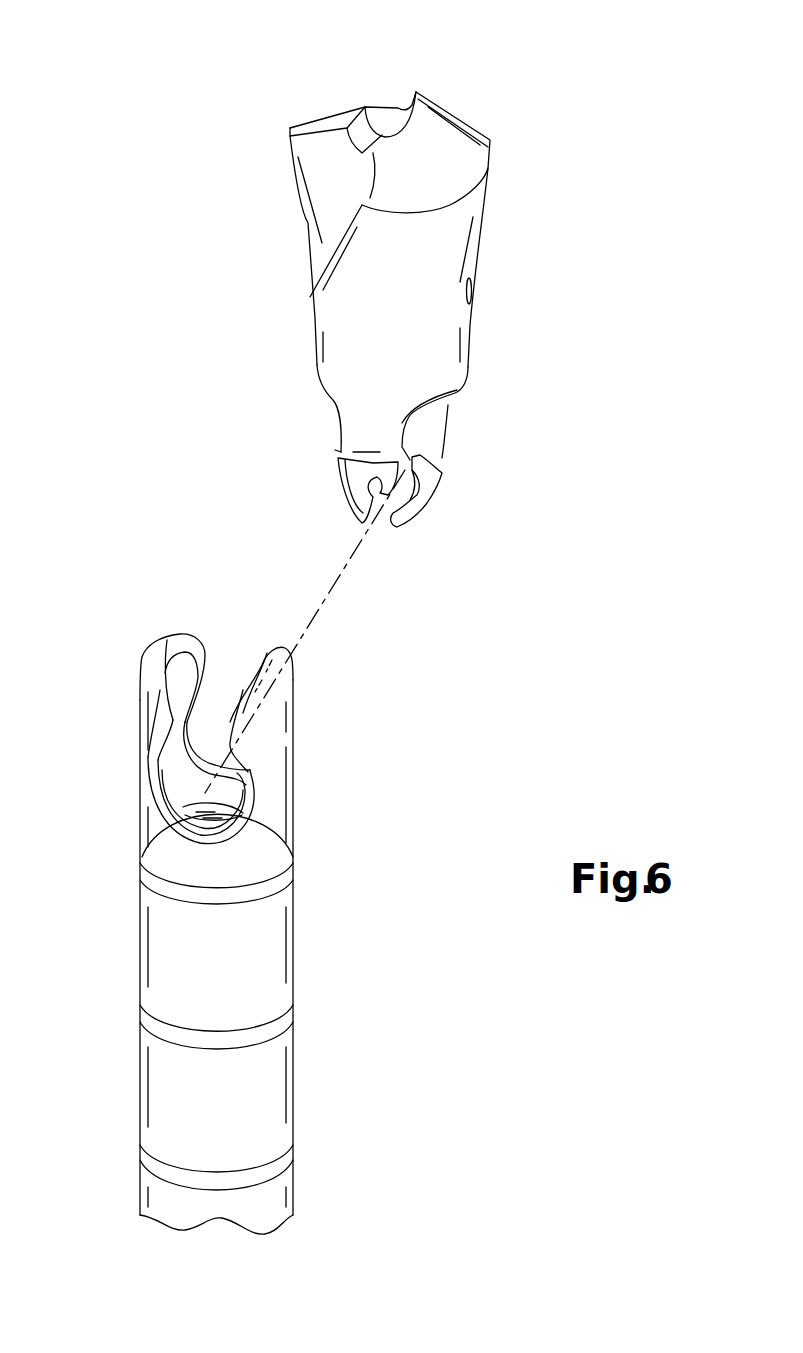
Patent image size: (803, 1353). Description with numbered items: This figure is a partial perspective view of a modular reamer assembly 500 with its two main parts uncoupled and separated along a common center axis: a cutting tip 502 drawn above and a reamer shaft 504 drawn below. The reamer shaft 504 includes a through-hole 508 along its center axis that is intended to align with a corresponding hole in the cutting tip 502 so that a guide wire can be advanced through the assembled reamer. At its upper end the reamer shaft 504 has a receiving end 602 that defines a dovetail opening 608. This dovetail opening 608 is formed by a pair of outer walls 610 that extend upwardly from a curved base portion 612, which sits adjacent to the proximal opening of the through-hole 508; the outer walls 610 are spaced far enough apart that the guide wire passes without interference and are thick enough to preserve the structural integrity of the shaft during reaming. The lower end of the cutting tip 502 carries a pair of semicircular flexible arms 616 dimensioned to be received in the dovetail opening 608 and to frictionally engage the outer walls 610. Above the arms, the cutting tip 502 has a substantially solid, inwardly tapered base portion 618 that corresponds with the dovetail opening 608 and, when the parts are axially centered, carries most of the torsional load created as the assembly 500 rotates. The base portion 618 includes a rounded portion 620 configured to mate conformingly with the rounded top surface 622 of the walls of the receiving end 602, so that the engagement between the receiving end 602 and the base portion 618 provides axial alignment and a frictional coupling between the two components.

The reamer assembly 500 is at (260, 108).
The cutting tip 502 is at (444, 148).
The reamer shaft 504 is at (263, 1082).
The through-hole 508 is at (180, 812).
The receiving end 602 is at (236, 640).
The dovetail opening 608 is at (180, 778).
The outer walls 610 is at (143, 723).
The curved base portion 612 is at (247, 813).
The flexible arms 616 is at (337, 485).
The base portion 618 is at (357, 430).
The rounded portion 620 is at (323, 393).
The rounded top surface 622 is at (167, 640).